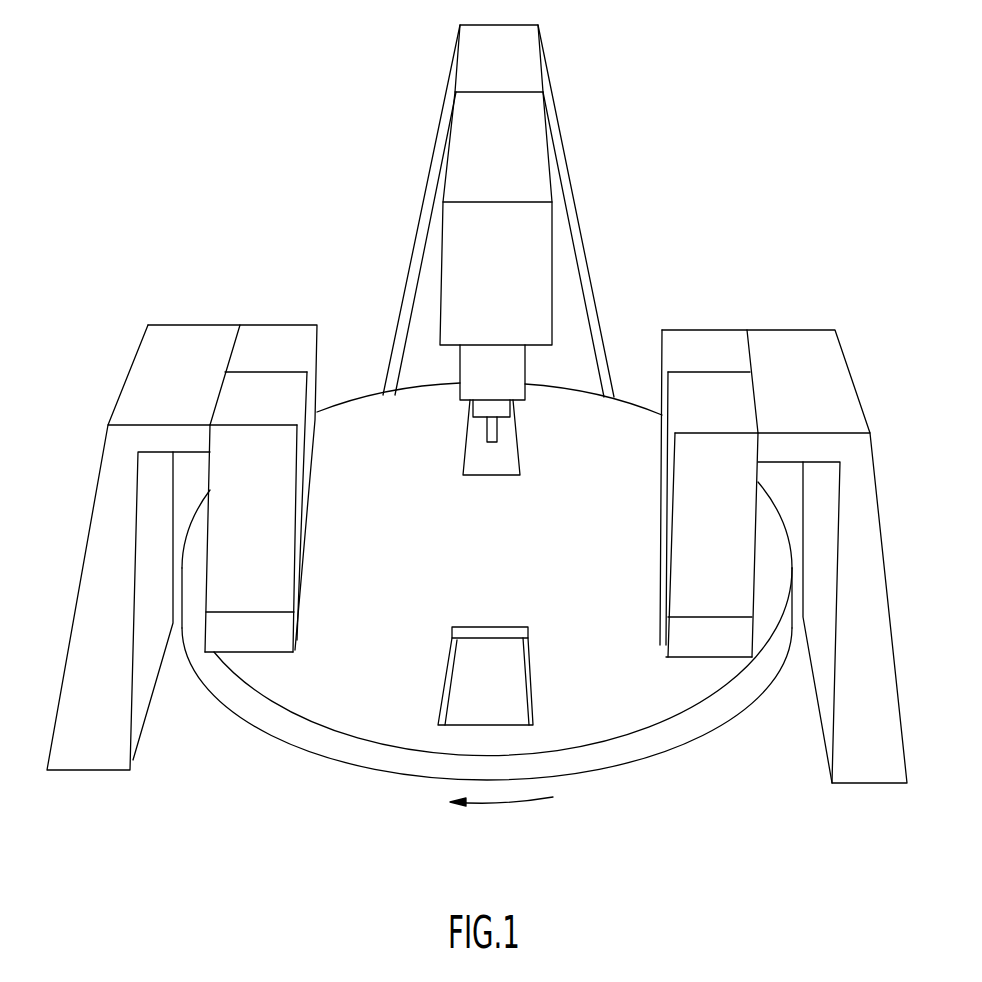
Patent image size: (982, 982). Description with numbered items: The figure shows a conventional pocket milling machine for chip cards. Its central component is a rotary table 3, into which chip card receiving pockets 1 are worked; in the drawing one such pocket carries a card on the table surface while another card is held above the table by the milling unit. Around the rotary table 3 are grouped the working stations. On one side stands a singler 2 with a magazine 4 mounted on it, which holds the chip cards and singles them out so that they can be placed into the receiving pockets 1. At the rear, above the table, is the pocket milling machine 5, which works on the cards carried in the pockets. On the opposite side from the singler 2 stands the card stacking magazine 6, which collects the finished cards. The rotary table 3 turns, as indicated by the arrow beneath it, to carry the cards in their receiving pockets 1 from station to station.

The chip card receiving pocket 1 is at (507, 462).
The singler 2 is at (275, 635).
The rotary table 3 is at (417, 622).
The magazine 4 is at (272, 342).
The pocket milling machine 5 is at (518, 152).
The card stacking magazine 6 is at (715, 352).